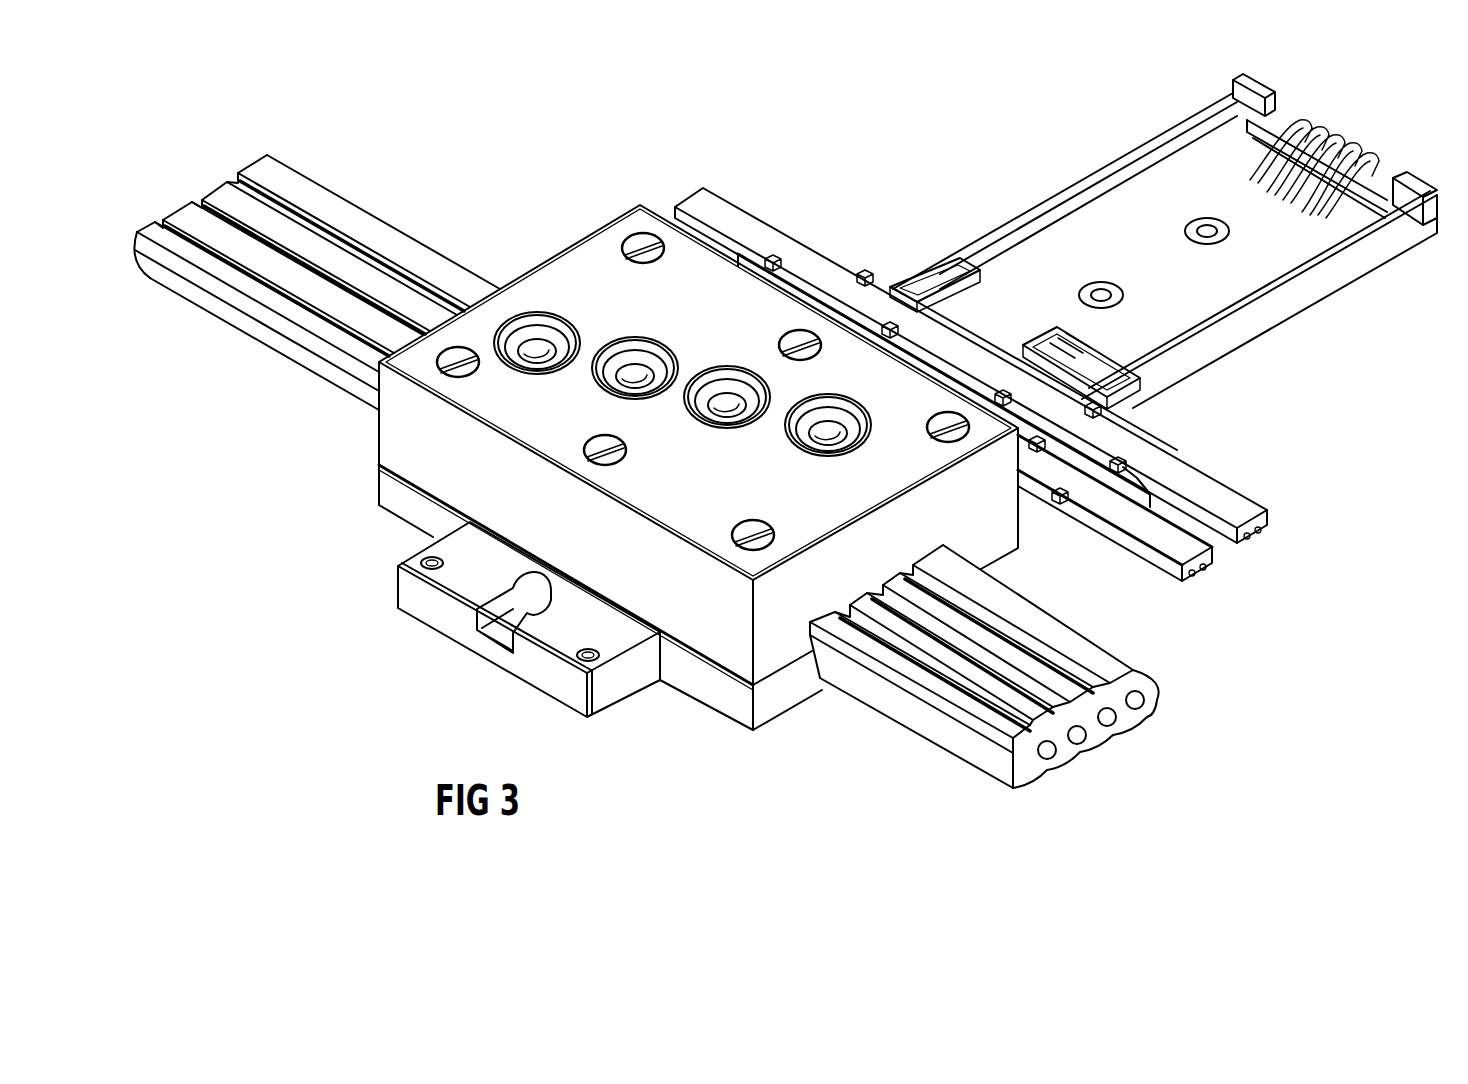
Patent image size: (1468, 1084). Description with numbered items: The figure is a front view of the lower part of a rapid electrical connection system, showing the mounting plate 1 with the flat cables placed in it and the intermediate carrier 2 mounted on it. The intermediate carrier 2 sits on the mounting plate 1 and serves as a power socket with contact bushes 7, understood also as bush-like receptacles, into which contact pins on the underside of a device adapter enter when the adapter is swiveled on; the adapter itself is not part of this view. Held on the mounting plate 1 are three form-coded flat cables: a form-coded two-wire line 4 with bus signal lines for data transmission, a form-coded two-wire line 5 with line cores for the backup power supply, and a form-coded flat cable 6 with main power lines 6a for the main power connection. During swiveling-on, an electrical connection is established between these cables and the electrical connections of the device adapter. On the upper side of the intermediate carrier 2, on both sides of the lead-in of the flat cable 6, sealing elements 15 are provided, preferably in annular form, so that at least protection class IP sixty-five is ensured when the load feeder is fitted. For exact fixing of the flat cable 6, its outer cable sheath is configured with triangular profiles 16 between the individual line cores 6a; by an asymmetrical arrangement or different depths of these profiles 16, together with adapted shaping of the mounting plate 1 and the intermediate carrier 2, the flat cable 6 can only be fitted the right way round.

The mounting plate 1 is at (1263, 320).
The intermediate carrier 2 is at (580, 266).
The form-coded two-wire line 4 is at (1218, 486).
The form-coded two-wire line 5 is at (1172, 535).
The form-coded flat cable 6 is at (1010, 691).
The main power lines 6a is at (1073, 742).
The contact bushes 7 is at (828, 432).
The sealing elements 15 is at (832, 402).
The triangular profiles 16 is at (1097, 745).